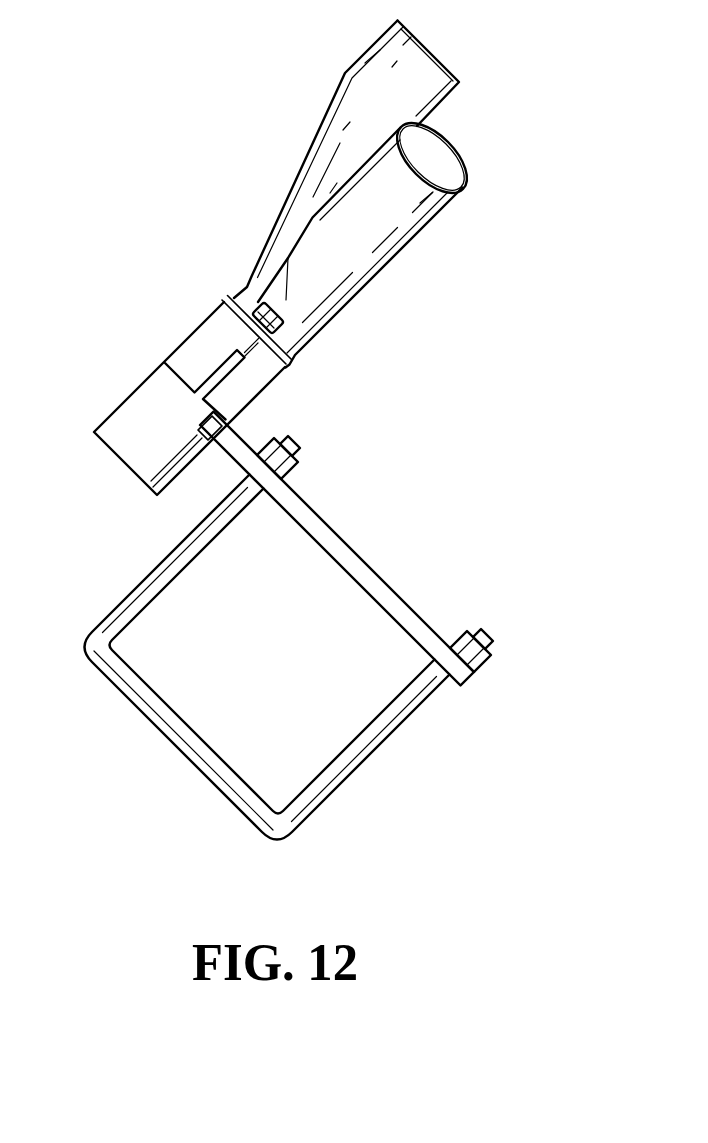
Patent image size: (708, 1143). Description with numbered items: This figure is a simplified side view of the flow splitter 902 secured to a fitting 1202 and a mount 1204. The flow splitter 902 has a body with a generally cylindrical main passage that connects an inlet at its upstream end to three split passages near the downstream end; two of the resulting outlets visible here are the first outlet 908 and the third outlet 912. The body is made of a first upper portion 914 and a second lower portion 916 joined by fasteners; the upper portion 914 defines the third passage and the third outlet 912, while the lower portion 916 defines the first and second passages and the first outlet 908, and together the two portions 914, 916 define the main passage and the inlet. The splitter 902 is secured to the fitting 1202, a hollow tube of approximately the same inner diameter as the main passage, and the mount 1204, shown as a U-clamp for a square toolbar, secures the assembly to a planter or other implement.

The flow splitter 902 is at (248, 200).
The first outlet 908 is at (435, 216).
The third outlet 912 is at (457, 91).
The first upper portion 914 is at (240, 270).
The second lower portion 916 is at (327, 346).
The fitting 1202 is at (130, 384).
The mount 1204 is at (418, 588).